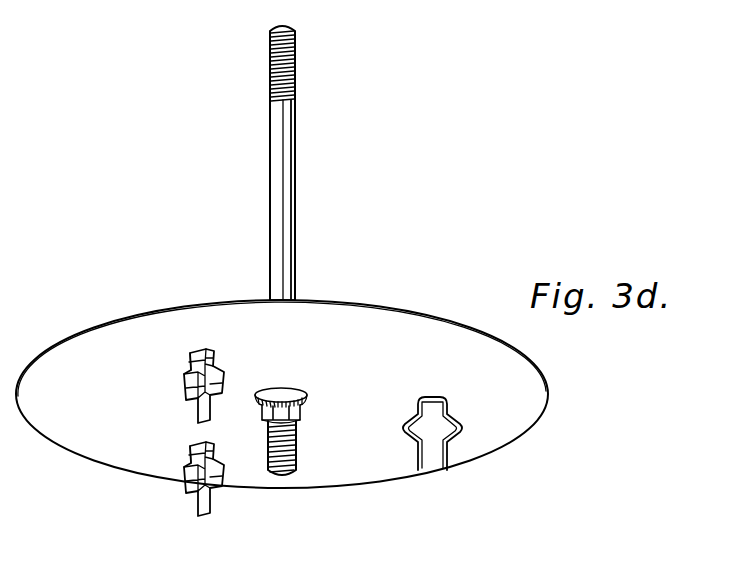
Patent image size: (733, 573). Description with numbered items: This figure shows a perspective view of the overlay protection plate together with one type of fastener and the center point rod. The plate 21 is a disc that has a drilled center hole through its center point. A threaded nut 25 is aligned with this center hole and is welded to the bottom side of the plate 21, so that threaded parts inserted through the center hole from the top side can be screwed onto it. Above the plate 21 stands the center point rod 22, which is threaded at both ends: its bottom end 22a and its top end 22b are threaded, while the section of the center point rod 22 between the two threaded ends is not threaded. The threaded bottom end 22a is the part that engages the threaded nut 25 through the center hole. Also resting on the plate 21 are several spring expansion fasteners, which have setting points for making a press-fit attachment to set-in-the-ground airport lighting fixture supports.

The plate 21 is at (523, 447).
The center point rod 22 is at (298, 140).
The bottom end 22a is at (297, 444).
The top end 22b is at (298, 46).
The threaded nut 25 is at (307, 411).